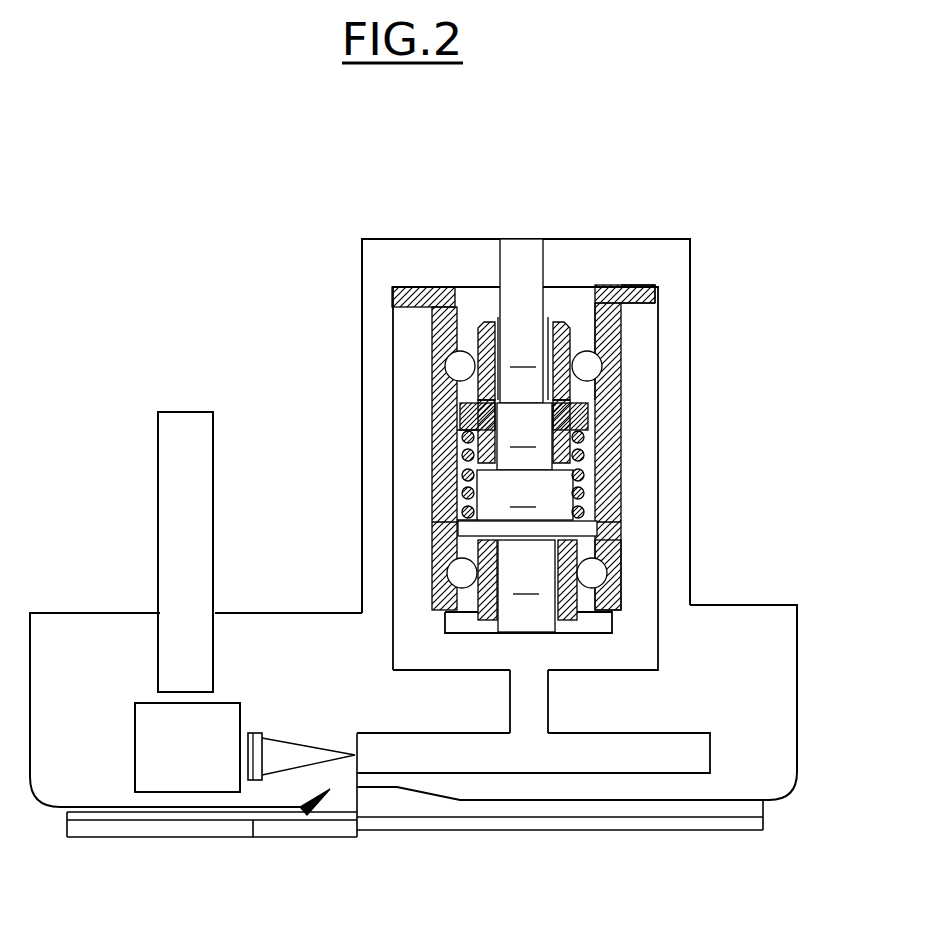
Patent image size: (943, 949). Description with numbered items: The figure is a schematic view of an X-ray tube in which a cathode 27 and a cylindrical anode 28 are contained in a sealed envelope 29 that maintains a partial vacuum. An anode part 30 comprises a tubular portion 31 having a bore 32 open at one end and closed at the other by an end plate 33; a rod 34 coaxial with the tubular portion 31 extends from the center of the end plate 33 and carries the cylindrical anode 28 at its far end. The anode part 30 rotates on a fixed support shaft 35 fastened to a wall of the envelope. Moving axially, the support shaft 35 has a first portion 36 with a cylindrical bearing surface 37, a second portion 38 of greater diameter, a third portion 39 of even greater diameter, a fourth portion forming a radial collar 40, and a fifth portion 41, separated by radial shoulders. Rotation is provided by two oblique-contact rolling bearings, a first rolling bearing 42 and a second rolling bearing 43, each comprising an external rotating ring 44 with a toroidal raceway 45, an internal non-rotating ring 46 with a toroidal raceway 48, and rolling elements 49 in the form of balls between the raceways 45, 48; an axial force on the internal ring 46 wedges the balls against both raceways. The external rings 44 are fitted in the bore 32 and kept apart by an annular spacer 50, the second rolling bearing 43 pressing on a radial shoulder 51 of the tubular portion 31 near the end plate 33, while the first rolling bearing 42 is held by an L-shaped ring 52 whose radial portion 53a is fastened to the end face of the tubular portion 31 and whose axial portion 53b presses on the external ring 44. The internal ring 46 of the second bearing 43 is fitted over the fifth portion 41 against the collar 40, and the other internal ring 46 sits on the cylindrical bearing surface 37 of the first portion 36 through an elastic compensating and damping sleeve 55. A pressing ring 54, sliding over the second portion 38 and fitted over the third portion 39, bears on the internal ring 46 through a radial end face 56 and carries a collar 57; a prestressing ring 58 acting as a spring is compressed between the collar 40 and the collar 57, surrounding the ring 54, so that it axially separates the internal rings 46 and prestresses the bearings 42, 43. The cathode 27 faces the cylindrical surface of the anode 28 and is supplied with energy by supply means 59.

The cathode 27 is at (180, 745).
The cylindrical anode 28 is at (468, 752).
The sealed envelope 29 is at (800, 677).
The anode part 30 is at (661, 527).
The tubular portion 31 is at (637, 473).
The bore 32 is at (620, 497).
The end plate 33 is at (582, 648).
The rod 34 is at (530, 700).
The fixed support shaft 35 is at (530, 239).
The first portion 36 is at (563, 447).
The cylindrical bearing surface 37 is at (600, 352).
The second portion 38 is at (524, 436).
The third portion 39 is at (525, 495).
The radial collar 40 is at (462, 528).
The fifth portion 41 is at (526, 586).
The first rolling bearing 42 is at (525, 388).
The second rolling bearing 43 is at (623, 559).
The external rotating ring 44 is at (623, 405).
The toroidal raceway 45 is at (600, 368).
The internal non-rotating ring 46 is at (450, 355).
The toroidal raceway 48 is at (470, 392).
The rolling elements 49 is at (470, 375).
The annular spacer 50 is at (462, 460).
The radial shoulder 51 is at (440, 600).
The ring 52 is at (603, 285).
The radial portion 53a is at (652, 291).
The axial portion 53b is at (650, 306).
The pressing ring 54 is at (462, 438).
The elastic compensating and damping sleeve 55 is at (502, 292).
The radial end face 56 is at (472, 405).
The collar 57 is at (462, 420).
The prestressing ring 58 is at (462, 488).
The supply means 59 is at (188, 485).